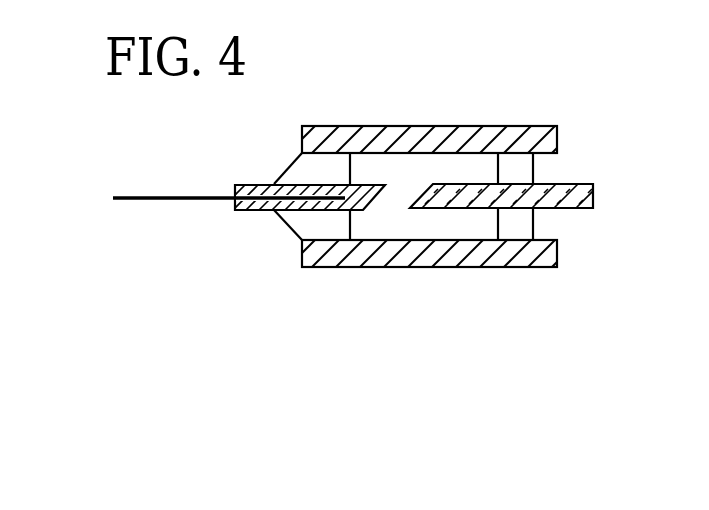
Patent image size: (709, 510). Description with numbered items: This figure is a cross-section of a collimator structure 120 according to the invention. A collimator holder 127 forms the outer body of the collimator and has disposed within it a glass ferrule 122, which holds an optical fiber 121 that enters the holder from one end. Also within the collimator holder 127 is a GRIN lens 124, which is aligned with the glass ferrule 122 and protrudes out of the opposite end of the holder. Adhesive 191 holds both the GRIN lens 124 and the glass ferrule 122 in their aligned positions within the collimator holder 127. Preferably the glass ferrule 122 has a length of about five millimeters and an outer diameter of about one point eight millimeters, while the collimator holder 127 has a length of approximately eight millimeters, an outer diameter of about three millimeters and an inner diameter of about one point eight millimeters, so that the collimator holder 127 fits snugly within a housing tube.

The collimator structure 120 is at (646, 60).
The optical fiber 121 is at (132, 199).
The glass ferrule 122 is at (238, 185).
The GRIN lens 124 is at (593, 192).
The collimator holder 127 is at (453, 126).
The adhesive 191 is at (297, 163).